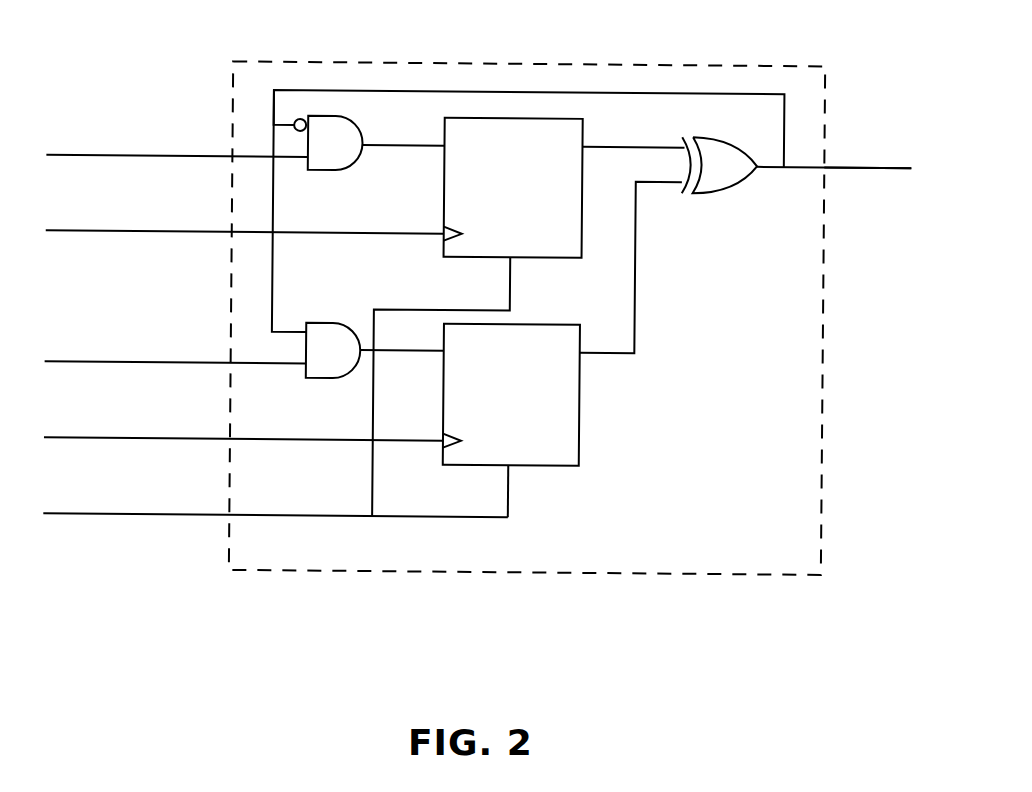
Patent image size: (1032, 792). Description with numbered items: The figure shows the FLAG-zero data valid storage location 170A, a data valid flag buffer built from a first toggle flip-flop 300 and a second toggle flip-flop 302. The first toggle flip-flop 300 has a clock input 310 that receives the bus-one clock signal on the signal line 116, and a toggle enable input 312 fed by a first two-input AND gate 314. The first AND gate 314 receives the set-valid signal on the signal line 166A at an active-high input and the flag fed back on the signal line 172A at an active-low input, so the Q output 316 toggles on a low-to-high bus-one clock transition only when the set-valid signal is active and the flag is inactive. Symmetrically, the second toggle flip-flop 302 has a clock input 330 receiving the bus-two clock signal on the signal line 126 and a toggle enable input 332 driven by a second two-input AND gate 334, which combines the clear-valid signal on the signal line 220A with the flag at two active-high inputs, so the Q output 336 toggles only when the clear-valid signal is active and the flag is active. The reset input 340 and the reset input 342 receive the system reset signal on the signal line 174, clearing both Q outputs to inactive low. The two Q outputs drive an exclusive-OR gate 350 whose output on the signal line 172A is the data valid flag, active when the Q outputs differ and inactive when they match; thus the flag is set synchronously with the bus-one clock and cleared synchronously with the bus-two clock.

The FLAG0 data valid storage location 170A is at (515, 64).
The signal line 166A is at (110, 160).
The signal line 116 is at (110, 236).
The signal line 220A is at (150, 367).
The signal line 126 is at (108, 443).
The signal line 174 is at (108, 519).
The signal line 172A is at (885, 166).
The first two-input AND gate 314 is at (326, 172).
The toggle enable input 312 is at (441, 146).
The clock input 310 is at (441, 234).
The first toggle flip-flop 300 is at (555, 258).
The Q output 316 is at (585, 146).
The reset input 340 is at (505, 272).
The exclusive-OR gate 350 is at (710, 191).
The second two-input AND gate 334 is at (326, 380).
The toggle enable input 332 is at (441, 352).
The clock input 330 is at (441, 442).
The second toggle flip-flop 302 is at (556, 466).
The Q output 336 is at (583, 352).
The reset input 342 is at (507, 468).